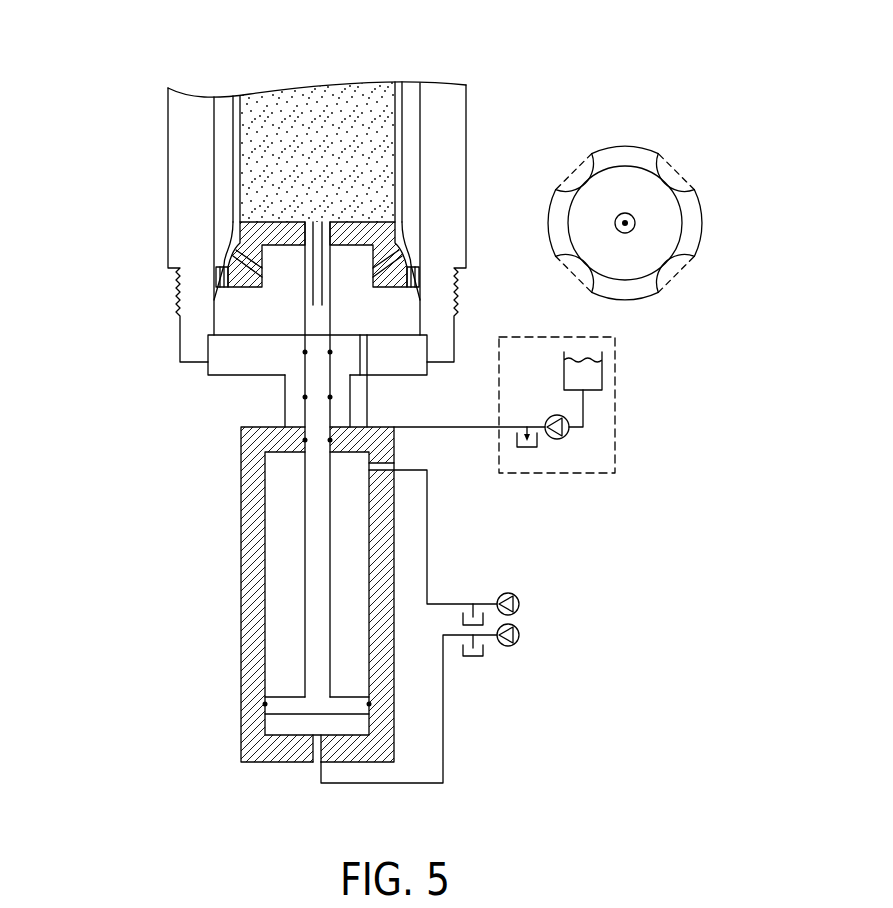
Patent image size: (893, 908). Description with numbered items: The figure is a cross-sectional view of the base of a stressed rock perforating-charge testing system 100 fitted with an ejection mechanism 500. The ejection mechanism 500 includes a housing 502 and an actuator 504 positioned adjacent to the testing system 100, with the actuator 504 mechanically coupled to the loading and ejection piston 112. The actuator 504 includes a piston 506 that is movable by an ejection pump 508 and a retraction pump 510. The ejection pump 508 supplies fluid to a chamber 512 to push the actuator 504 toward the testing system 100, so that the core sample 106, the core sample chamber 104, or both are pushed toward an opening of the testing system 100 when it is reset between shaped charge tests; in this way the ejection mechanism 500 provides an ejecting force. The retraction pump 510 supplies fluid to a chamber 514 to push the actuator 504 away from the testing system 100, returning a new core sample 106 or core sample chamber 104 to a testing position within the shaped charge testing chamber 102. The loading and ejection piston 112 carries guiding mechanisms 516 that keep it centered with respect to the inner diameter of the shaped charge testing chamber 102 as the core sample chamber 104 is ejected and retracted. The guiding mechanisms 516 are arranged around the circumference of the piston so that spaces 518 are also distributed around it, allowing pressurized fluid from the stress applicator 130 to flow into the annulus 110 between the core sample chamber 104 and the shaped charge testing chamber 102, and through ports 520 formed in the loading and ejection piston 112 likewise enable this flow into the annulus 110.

The stressed rock perforating-charge testing system 100 is at (147, 82).
The shaped charge testing chamber 102 is at (445, 179).
The core sample chamber 104 is at (410, 129).
The core sample 106 is at (313, 110).
The annulus 110 is at (230, 152).
The loading and ejection piston 112 is at (233, 232).
The stress applicator 130 is at (615, 410).
The ejection mechanism 500 is at (112, 472).
The housing 502 is at (241, 666).
The actuator 504 is at (318, 587).
The piston 506 is at (265, 750).
The ejection pump 508 is at (520, 634).
The retraction pump 510 is at (520, 603).
The chamber 512 is at (304, 740).
The chamber 514 is at (284, 488).
The guiding mechanisms 516 is at (218, 278).
The spaces 518 is at (583, 165).
The through ports 520 is at (222, 290).